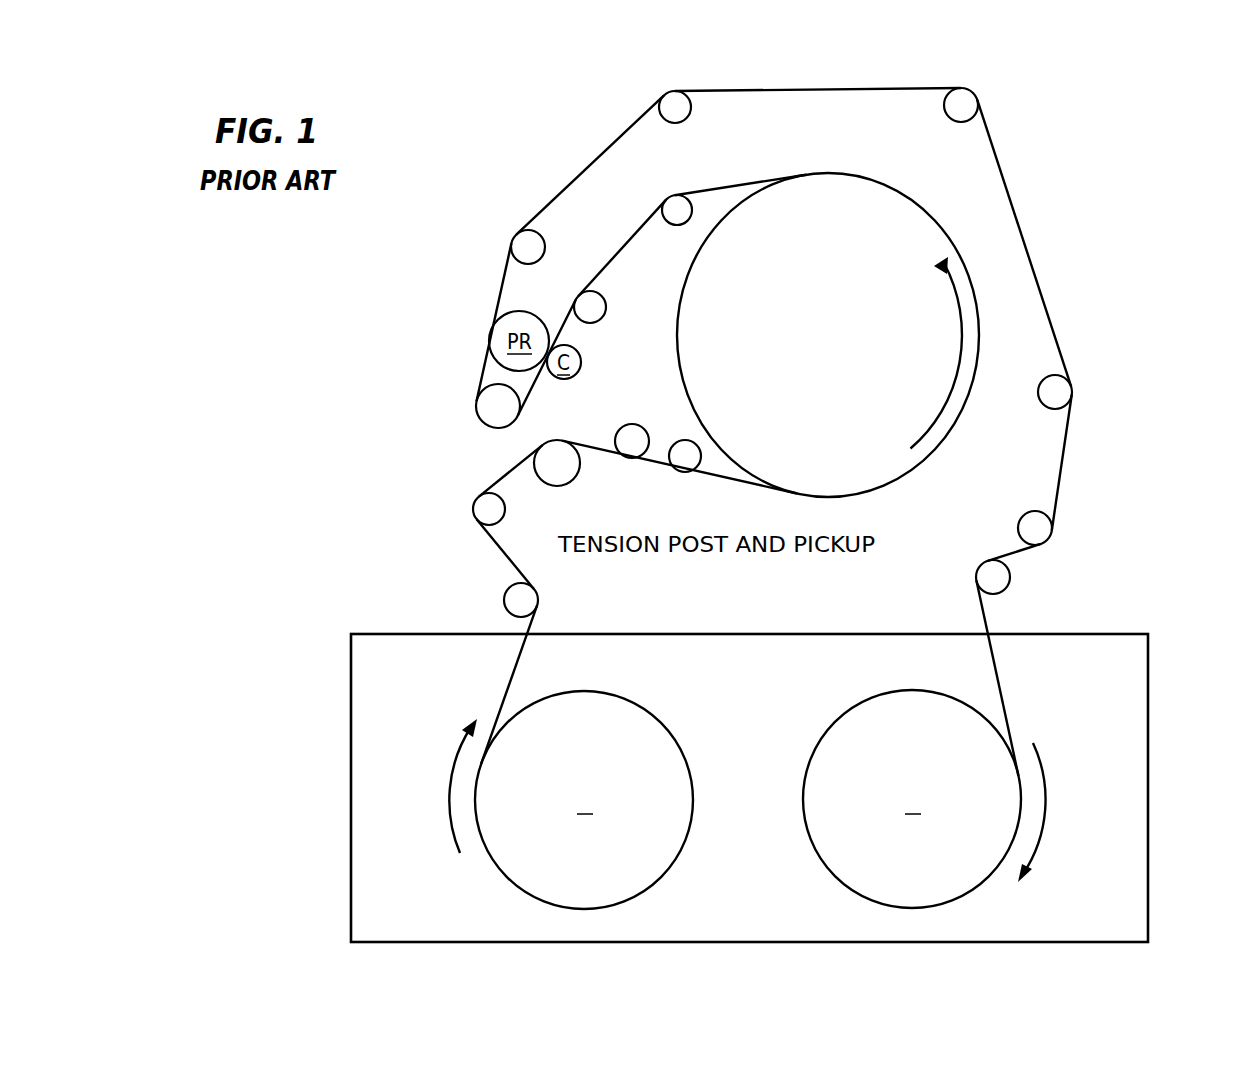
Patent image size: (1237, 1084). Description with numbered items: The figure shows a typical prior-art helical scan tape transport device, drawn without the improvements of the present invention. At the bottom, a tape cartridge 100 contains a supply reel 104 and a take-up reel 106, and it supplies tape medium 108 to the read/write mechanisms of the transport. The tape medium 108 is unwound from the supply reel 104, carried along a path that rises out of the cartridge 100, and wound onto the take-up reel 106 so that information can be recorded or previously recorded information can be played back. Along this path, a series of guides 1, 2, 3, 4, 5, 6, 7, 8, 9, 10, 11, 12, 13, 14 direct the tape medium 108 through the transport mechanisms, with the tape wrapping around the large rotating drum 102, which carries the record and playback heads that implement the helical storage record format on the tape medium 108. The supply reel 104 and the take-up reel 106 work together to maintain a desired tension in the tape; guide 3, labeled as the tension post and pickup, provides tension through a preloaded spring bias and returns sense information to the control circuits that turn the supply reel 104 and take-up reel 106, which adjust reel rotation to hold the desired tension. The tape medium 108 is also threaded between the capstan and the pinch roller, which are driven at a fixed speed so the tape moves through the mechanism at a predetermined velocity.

The guide 1 is at (527, 613).
The guide 2 is at (495, 522).
The guide 3 is at (563, 476).
The guide 4 is at (638, 454).
The guide 5 is at (691, 469).
The guide 6 is at (683, 223).
The guide 7 is at (596, 320).
The guide 8 is at (504, 419).
The guide 9 is at (534, 260).
The guide 10 is at (685, 120).
The guide 11 is at (970, 118).
The guide 12 is at (1065, 405).
The guide 13 is at (1045, 541).
The guide 14 is at (1003, 590).
The tape cartridge 100 is at (1150, 707).
The drum 102 is at (945, 463).
The supply reel 104 is at (610, 705).
The take-up reel 106 is at (856, 712).
The tape medium 108 is at (513, 661).